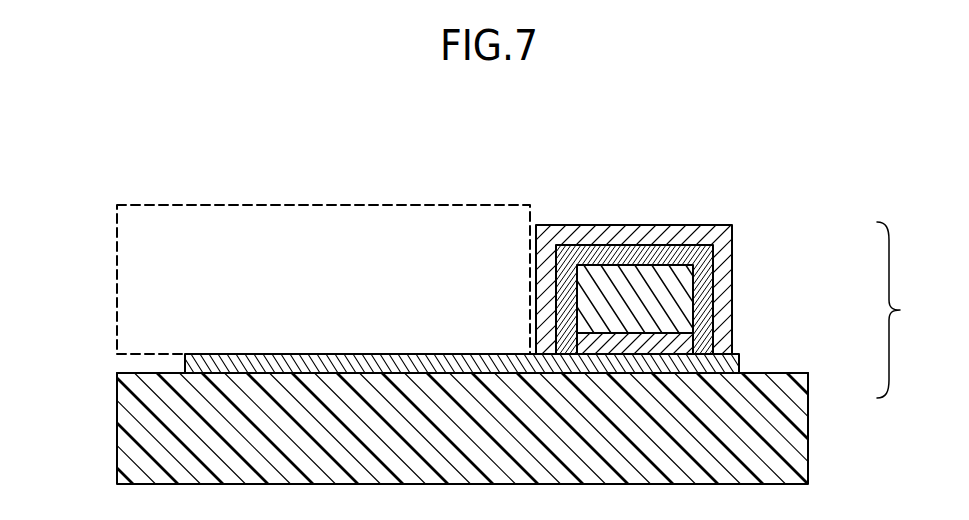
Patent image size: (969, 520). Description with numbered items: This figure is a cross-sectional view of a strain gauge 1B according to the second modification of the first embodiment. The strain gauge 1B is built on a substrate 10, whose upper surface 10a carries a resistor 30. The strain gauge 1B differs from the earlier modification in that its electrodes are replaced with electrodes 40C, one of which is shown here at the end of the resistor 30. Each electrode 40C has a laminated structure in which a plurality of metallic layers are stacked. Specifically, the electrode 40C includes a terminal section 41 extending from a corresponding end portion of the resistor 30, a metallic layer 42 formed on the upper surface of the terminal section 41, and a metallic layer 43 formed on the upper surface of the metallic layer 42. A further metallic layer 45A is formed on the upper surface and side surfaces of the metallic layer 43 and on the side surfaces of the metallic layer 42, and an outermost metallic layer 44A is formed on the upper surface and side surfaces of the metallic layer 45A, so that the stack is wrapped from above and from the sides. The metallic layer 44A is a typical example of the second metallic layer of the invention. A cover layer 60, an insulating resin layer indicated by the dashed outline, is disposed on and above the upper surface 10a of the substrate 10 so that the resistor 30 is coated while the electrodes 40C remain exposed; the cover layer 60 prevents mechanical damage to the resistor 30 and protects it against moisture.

The strain gauge 1B is at (63, 180).
The substrate 10 is at (137, 435).
The upper surface 10a is at (150, 373).
The resistor 30 is at (520, 343).
The terminal section 41 is at (530, 375).
The metallic layer 42 is at (687, 343).
The metallic layer 43 is at (687, 310).
The metallic layer 44A is at (720, 243).
The metallic layer 45A is at (705, 278).
The electrode 40C is at (916, 310).
The cover layer 60 is at (425, 205).